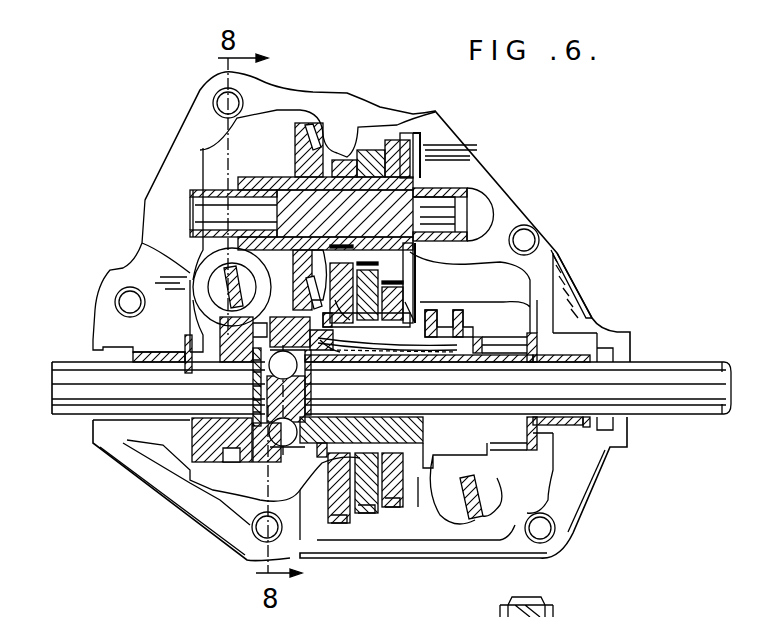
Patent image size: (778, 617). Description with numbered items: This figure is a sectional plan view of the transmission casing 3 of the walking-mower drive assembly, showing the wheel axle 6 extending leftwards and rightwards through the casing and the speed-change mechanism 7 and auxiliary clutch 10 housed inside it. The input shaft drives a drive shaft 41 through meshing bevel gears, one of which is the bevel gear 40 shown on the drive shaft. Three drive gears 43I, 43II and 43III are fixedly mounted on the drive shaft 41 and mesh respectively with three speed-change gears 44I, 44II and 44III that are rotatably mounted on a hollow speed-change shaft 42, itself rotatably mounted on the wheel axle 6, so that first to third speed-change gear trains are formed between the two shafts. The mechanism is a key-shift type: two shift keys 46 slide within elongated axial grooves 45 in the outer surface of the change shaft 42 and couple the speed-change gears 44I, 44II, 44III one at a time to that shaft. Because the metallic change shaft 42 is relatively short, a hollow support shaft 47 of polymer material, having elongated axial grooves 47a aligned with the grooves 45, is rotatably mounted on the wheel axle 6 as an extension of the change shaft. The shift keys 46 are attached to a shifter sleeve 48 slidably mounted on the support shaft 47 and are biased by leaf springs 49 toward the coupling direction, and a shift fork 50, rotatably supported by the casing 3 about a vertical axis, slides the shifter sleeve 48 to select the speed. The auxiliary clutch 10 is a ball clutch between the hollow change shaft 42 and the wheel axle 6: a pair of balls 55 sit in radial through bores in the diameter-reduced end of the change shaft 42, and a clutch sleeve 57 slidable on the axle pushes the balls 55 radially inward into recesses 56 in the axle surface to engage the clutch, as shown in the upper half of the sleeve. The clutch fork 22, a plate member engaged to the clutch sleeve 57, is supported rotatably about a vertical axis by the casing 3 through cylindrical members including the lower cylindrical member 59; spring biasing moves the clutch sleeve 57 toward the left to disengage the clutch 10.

The transmission casing 3 is at (512, 197).
The wheel axle 6 is at (533, 378).
The speed-change mechanism 7 is at (418, 298).
The auxiliary clutch 10 is at (252, 468).
The clutch fork 22 is at (218, 280).
The bevel gear 40 is at (317, 138).
The drive shaft 41 is at (447, 181).
The speed-change shaft 42 is at (358, 437).
The first drive gear 43I is at (343, 170).
The second drive gear 43II is at (373, 157).
The third drive gear 43III is at (405, 150).
The first speed-change gear 44I is at (341, 524).
The second speed-change gear 44II is at (367, 514).
The third speed-change gear 44III is at (393, 508).
The elongated axial grooves 45 is at (360, 358).
The shift keys 46 is at (404, 340).
The hollow support shaft 47 is at (545, 468).
The elongated axial grooves 47a is at (497, 348).
The shifter sleeve 48 is at (520, 280).
The leaf springs 49 is at (333, 352).
The shift fork 50 is at (462, 495).
The balls 55 is at (256, 382).
The recesses 56 is at (305, 394).
The clutch sleeve 57 is at (188, 334).
The lower cylindrical member 59 is at (215, 293).